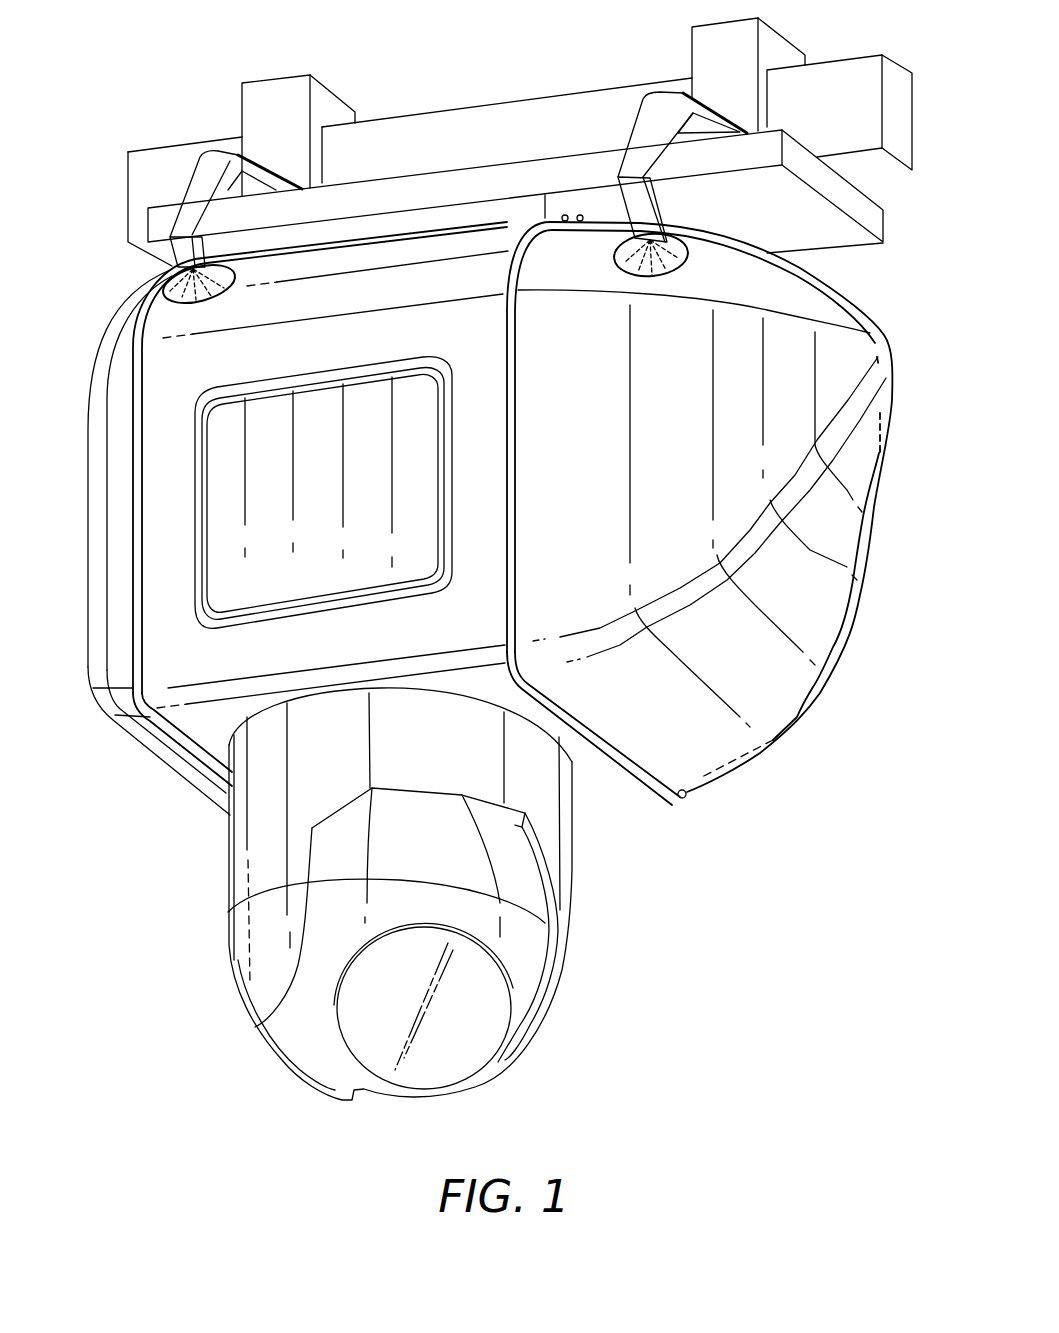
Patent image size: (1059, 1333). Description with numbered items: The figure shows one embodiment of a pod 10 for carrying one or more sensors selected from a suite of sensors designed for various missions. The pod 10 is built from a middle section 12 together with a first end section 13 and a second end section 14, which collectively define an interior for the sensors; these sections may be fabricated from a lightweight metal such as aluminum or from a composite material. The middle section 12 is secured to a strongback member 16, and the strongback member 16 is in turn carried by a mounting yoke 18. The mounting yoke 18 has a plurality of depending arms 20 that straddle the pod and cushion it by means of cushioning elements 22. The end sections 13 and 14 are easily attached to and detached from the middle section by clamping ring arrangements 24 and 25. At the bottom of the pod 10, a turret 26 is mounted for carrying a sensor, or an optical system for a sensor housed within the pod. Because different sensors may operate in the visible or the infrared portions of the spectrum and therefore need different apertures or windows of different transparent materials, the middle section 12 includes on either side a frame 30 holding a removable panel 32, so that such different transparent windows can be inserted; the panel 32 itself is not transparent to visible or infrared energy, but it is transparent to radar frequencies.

The pod 10 is at (840, 777).
The middle section 12 is at (227, 665).
The first end section 13 is at (813, 600).
The second end section 14 is at (97, 655).
The strongback member 16 is at (445, 187).
The mounting yoke 18 is at (848, 75).
The depending arms 20 is at (203, 175).
The cushioning elements 22 is at (173, 290).
The clamping ring arrangement 24 is at (643, 778).
The clamping ring arrangement 25 is at (140, 502).
The turret 26 is at (241, 962).
The frame 30 is at (197, 472).
The removable panel 32 is at (298, 553).